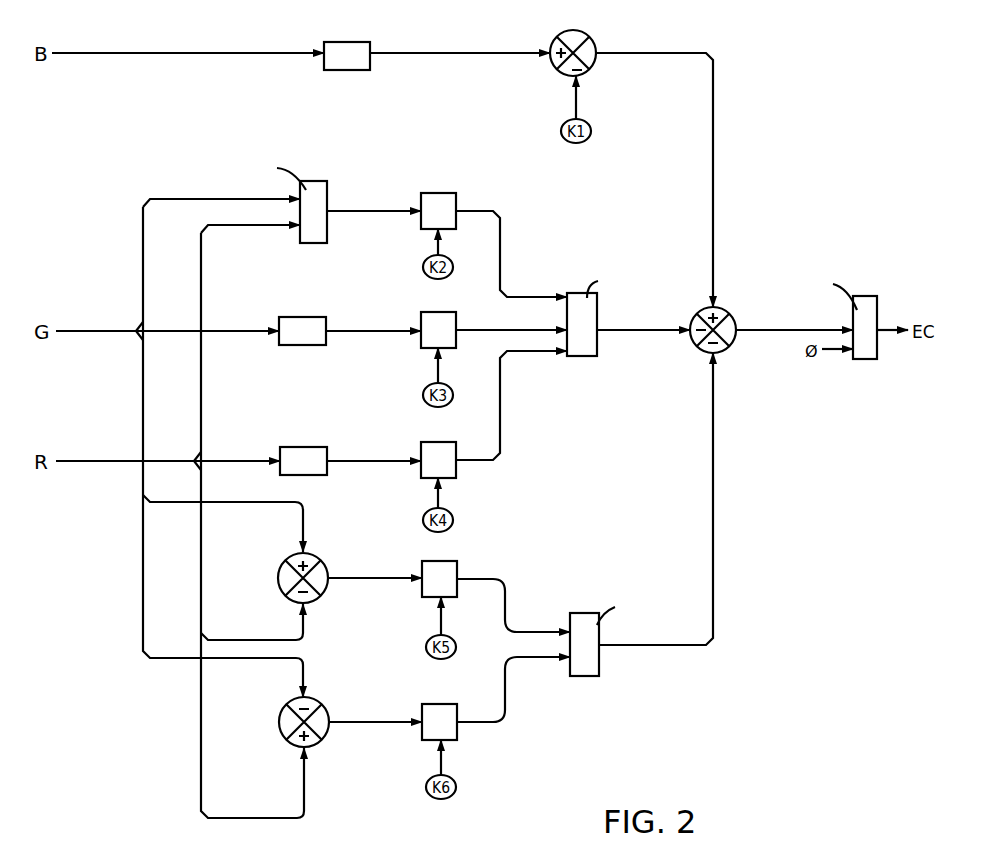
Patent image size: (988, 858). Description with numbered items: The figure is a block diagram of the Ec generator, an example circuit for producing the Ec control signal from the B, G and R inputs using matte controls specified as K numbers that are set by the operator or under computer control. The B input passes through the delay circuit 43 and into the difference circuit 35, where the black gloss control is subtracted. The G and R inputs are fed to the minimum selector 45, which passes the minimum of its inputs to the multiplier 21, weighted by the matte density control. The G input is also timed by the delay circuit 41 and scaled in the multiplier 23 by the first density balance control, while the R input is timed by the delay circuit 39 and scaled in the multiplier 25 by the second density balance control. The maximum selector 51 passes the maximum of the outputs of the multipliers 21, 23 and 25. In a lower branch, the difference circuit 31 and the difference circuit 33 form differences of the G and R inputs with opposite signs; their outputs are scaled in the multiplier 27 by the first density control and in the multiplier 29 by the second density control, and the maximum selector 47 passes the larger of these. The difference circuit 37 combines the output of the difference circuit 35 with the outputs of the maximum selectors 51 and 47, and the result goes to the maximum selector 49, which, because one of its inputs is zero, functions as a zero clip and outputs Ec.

The multiplier 21 is at (455, 195).
The multiplier 23 is at (468, 298).
The multiplier 25 is at (456, 443).
The multiplier 27 is at (458, 561).
The multiplier 29 is at (458, 704).
The difference circuit 31 is at (321, 561).
The difference circuit 33 is at (322, 705).
The difference circuit 35 is at (590, 35).
The difference circuit 37 is at (731, 314).
The delay circuit 39 is at (327, 449).
The delay circuit 41 is at (326, 318).
The delay circuit 43 is at (370, 68).
The minimum selector 45 is at (327, 186).
The maximum selector 47 is at (599, 676).
The maximum selector 49 is at (870, 359).
The maximum selector 51 is at (597, 356).